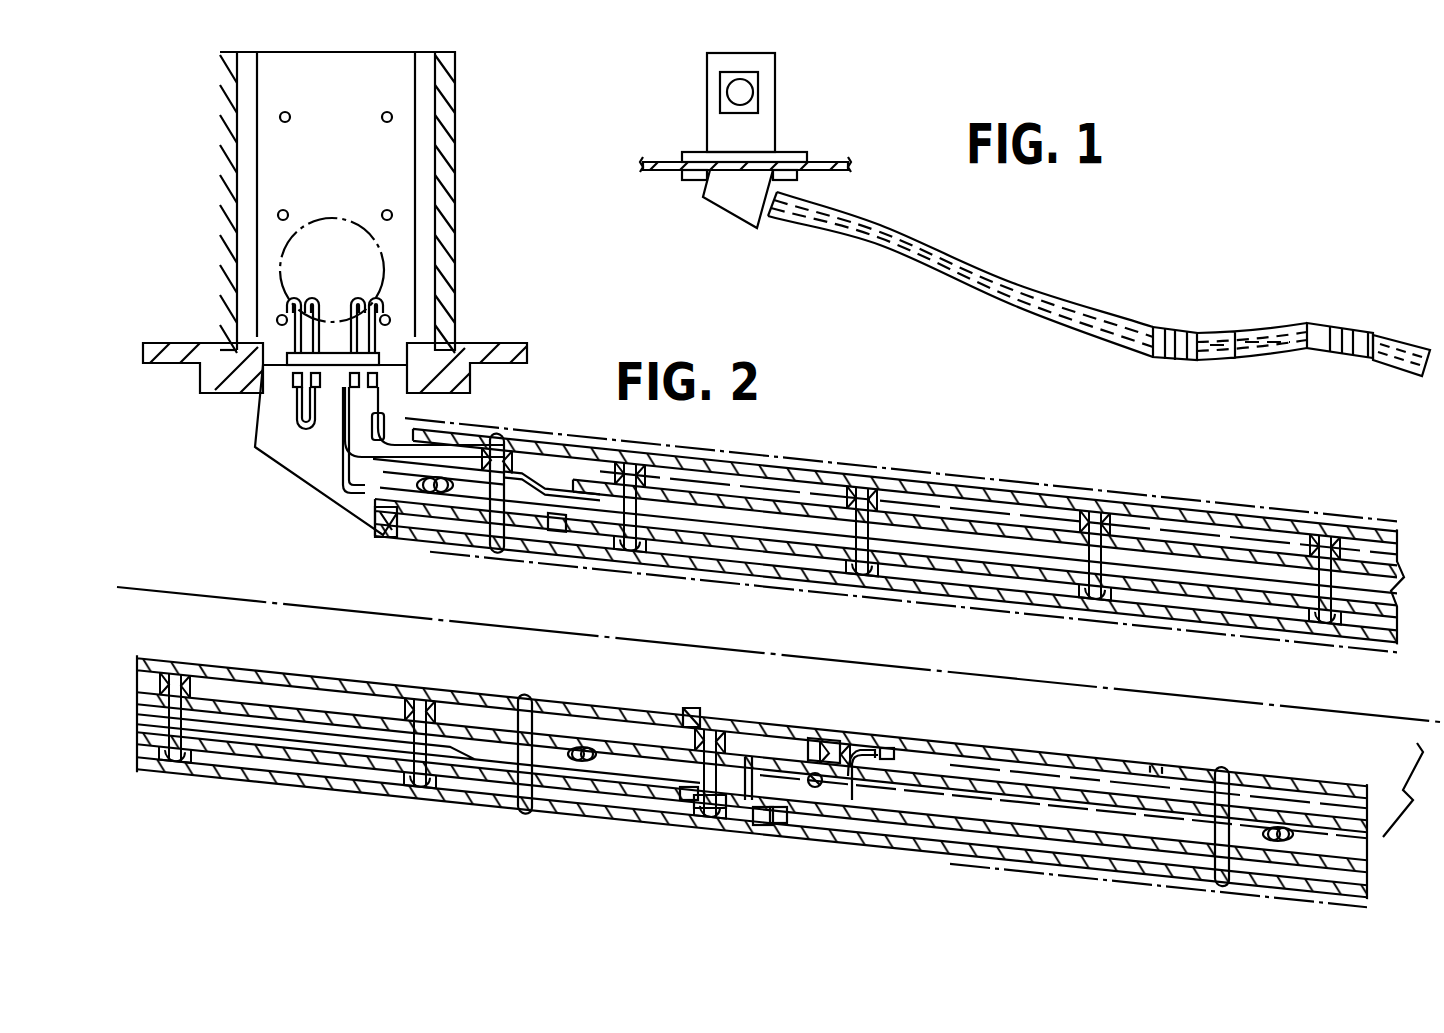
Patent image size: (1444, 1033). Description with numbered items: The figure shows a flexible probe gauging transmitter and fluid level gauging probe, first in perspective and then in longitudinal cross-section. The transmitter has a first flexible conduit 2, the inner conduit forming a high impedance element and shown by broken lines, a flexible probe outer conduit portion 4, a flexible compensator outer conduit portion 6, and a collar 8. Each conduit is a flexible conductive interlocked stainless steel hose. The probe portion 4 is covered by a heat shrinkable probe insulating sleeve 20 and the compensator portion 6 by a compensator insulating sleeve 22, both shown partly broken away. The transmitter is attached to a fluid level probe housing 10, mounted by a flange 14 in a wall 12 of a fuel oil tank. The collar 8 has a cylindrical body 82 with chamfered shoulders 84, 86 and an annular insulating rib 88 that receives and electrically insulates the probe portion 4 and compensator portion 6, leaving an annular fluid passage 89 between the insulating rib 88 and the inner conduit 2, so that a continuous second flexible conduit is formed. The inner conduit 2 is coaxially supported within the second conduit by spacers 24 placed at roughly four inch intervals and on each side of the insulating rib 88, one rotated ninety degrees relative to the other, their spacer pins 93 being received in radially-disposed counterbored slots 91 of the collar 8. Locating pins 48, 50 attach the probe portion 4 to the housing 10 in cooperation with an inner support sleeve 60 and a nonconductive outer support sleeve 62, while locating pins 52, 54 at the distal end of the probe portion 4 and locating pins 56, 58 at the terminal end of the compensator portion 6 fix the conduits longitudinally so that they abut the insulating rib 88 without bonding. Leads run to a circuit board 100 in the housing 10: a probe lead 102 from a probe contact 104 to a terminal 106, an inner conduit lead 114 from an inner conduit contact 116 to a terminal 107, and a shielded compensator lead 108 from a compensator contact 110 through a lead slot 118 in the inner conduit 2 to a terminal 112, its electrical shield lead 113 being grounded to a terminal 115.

In FIG. 1, the first flexible conduit 2 is at (907, 231).
In FIG. 2, the first flexible conduit 2 is at (965, 512).
In FIG. 1, the flexible probe outer conduit portion 4 is at (1175, 327).
In FIG. 2, the flexible probe outer conduit portion 4 is at (618, 718).
In FIG. 1, the flexible compensator outer conduit portion 6 is at (1350, 326).
In FIG. 2, the flexible compensator outer conduit portion 6 is at (1162, 768).
In FIG. 1, the collar 8 is at (1268, 323).
In FIG. 2, the collar 8 is at (772, 714).
In FIG. 1, the fluid level probe housing 10 is at (775, 104).
In FIG. 2, the fluid level probe housing 10 is at (455, 226).
In FIG. 1, the wall 12 is at (838, 160).
In FIG. 1, the flange 14 is at (699, 151).
In FIG. 1, the probe insulating sleeve 20 is at (1093, 342).
In FIG. 2, the probe insulating sleeve 20 is at (784, 461).
In FIG. 1, the compensator insulating sleeve 22 is at (1313, 352).
In FIG. 2, the compensator insulating sleeve 22 is at (1000, 755).
In FIG. 2, the spacers 24 is at (640, 466).
In FIG. 2, the locating pin 48 is at (432, 493).
In FIG. 2, the locating pin 50 is at (470, 545).
In FIG. 2, the locating pin 52 is at (512, 808).
In FIG. 2, the locating pin 54 is at (583, 762).
In FIG. 2, the locating pin 56 is at (1218, 882).
In FIG. 2, the locating pin 58 is at (1278, 828).
In FIG. 2, the inner support sleeve 60 is at (370, 512).
In FIG. 2, the nonconductive outer support sleeve 62 is at (395, 535).
In FIG. 2, the cylindrical body 82 is at (815, 745).
In FIG. 2, the chamfered shoulder 84 is at (686, 712).
In FIG. 2, the chamfered shoulder 86 is at (872, 736).
In FIG. 2, the annular insulating rib 88 is at (768, 826).
In FIG. 2, the annular fluid passage 89 is at (748, 800).
In FIG. 2, the counterbored slots 91 is at (712, 806).
In FIG. 2, the spacer pins 93 is at (690, 795).
In FIG. 2, the circuit board 100 is at (420, 152).
In FIG. 2, the probe lead 102 is at (380, 440).
In FIG. 2, the probe contact 104 is at (595, 462).
In FIG. 2, the terminal 106 is at (372, 325).
In FIG. 2, the terminal 107 is at (351, 327).
In FIG. 2, the compensator lead 108 is at (720, 524).
In FIG. 2, the compensator contact 110 is at (905, 755).
In FIG. 2, the terminal 112 is at (318, 325).
In FIG. 2, the electrical shield lead 113 is at (290, 395).
In FIG. 2, the inner conduit lead 114 is at (345, 483).
In FIG. 2, the terminal 115 is at (278, 320).
In FIG. 2, the inner conduit contact 116 is at (557, 528).
In FIG. 2, the lead slot 118 is at (850, 800).